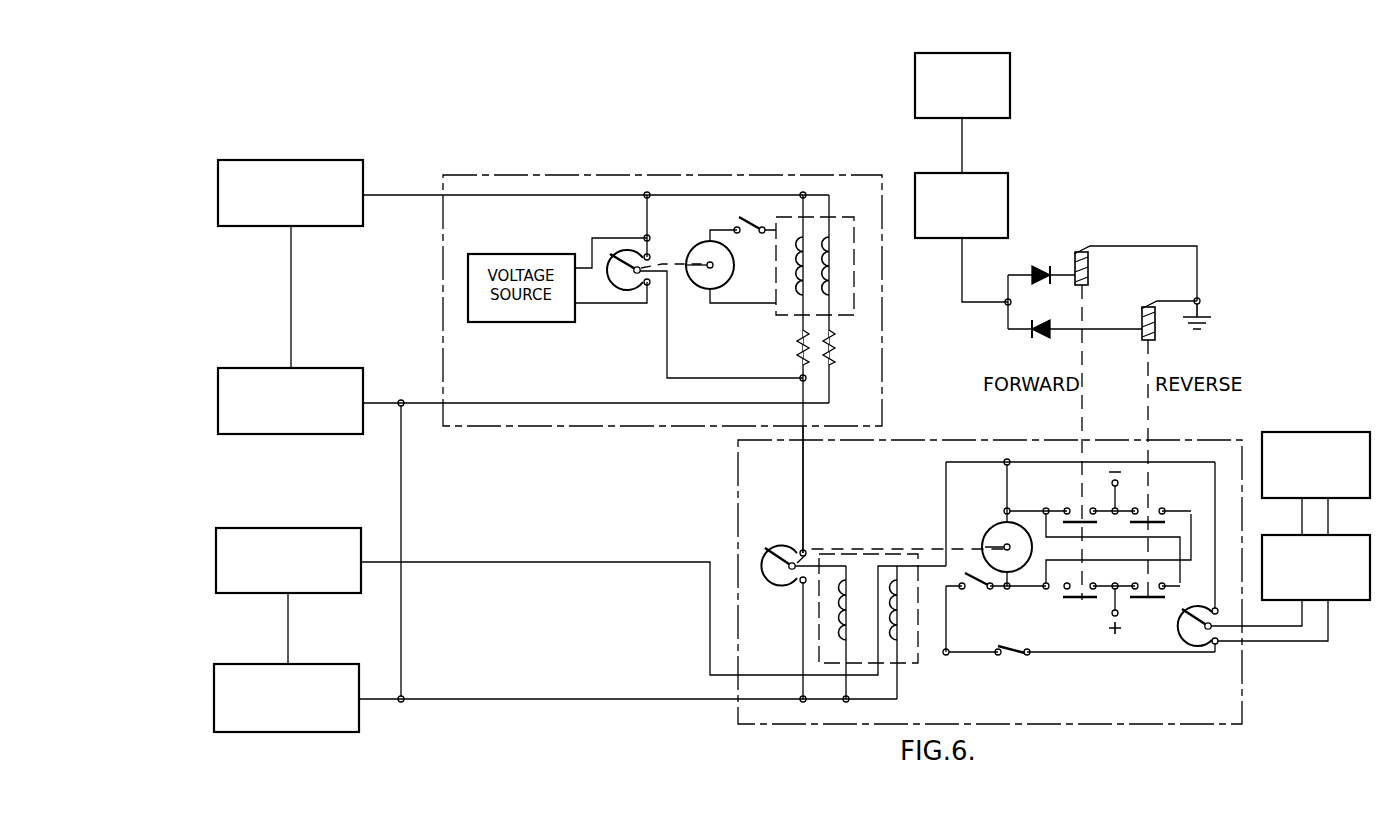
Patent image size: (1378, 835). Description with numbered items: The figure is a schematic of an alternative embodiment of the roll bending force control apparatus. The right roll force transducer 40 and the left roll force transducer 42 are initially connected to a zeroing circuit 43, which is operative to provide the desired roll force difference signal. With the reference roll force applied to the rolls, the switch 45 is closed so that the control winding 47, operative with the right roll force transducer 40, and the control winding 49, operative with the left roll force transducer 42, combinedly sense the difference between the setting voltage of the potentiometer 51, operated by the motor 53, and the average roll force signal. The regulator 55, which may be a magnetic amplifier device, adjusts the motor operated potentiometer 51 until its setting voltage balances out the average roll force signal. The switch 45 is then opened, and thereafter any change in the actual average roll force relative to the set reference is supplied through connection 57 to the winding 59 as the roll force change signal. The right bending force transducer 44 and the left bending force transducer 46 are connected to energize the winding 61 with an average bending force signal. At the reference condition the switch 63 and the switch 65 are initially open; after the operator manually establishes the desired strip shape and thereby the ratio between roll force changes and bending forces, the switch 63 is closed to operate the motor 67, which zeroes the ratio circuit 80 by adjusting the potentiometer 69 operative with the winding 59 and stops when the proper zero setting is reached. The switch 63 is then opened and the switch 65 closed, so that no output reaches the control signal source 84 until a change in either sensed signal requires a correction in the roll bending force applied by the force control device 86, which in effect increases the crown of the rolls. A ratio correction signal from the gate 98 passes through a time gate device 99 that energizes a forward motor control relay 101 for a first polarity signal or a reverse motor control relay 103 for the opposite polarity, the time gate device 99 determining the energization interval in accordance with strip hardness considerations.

The right roll force transducer 40 is at (261, 160).
The left roll force transducer 42 is at (259, 368).
The zeroing circuit 43 is at (489, 174).
The right bending force transducer 44 is at (259, 528).
The switch 45 is at (735, 224).
The left bending force transducer 46 is at (257, 664).
The control winding 47 is at (810, 263).
The control winding 49 is at (838, 263).
The potentiometer 51 is at (612, 279).
The motor 53 is at (702, 289).
The regulator 55 is at (778, 315).
The connection 57 is at (806, 483).
The winding 59 is at (851, 615).
The winding 61 is at (900, 611).
The switch 63 is at (973, 590).
The switch 65 is at (1011, 656).
The motor 67 is at (996, 528).
The potentiometer 69 is at (779, 586).
The ratio circuit 80 is at (738, 459).
The control signal source 84 is at (1319, 432).
The force control device 86 is at (1292, 535).
The gate 98 is at (952, 53).
The time gate device 99 is at (947, 173).
The forward motor control relay 101 is at (1090, 270).
The reverse motor control relay 103 is at (1140, 315).